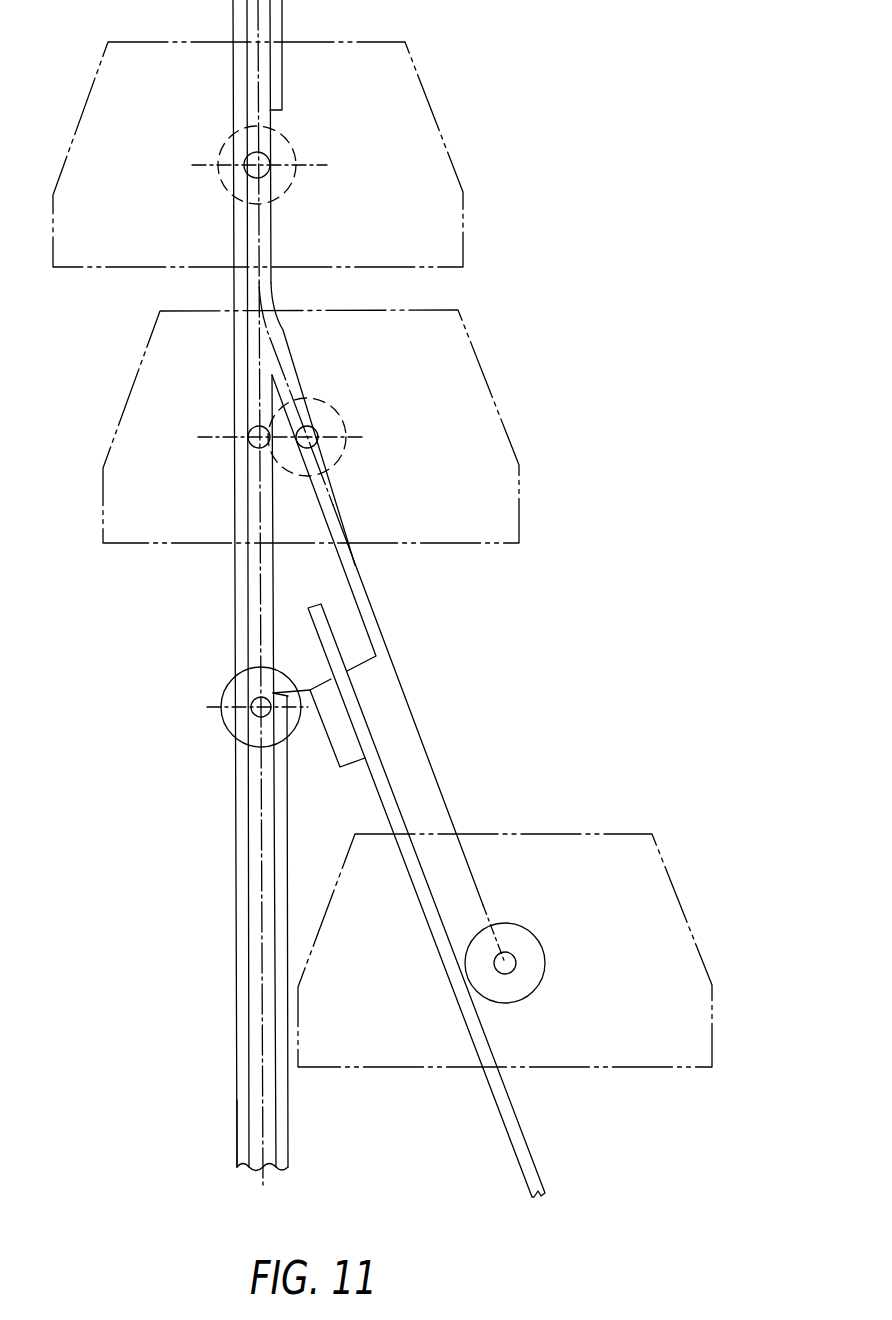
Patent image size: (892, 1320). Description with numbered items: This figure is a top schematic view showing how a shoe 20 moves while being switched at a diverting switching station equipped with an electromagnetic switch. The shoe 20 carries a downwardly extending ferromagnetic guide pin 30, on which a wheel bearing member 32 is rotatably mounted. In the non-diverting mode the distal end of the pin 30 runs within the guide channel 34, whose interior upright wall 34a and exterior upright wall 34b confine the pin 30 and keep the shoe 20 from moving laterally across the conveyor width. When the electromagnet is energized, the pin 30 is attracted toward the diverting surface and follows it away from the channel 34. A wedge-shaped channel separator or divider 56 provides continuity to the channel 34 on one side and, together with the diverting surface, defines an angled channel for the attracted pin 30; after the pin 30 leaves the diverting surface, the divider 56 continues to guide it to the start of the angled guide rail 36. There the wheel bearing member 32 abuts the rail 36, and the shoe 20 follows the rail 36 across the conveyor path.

The shoe 20 is at (452, 212).
The guide pin 30 is at (505, 963).
The wheel bearing member 32 is at (532, 992).
The guide rail or channel 34 is at (237, 1080).
The interior upright channel wall 34a is at (288, 1162).
The exterior upright channel wall 34b is at (237, 1160).
The angled guide rail 36 is at (535, 1155).
The channel separator or divider 56 is at (377, 637).